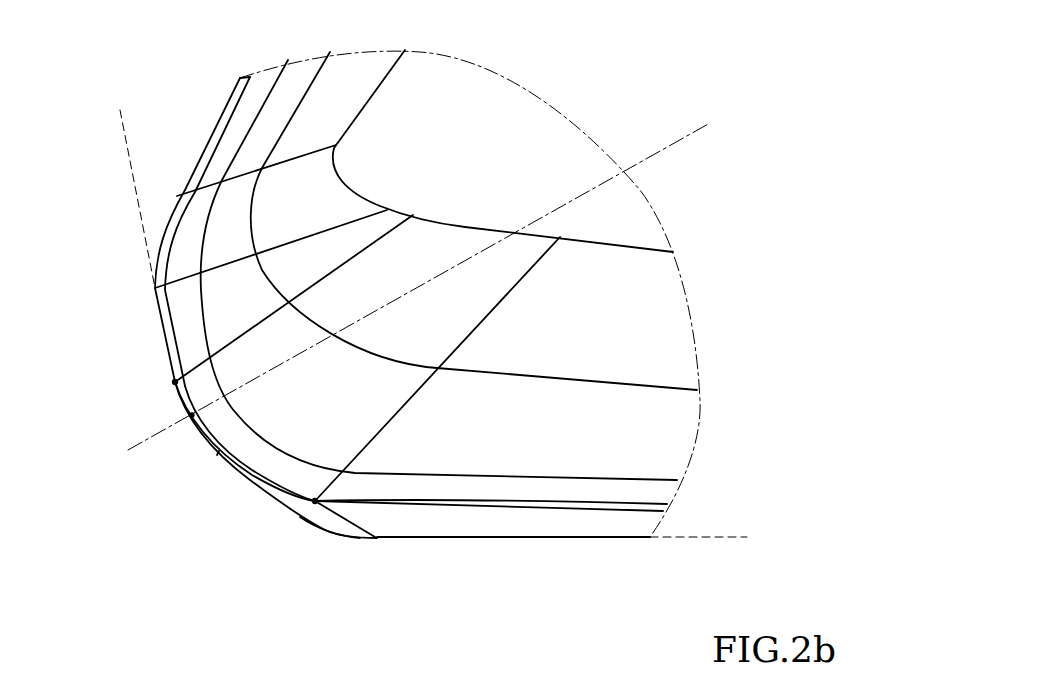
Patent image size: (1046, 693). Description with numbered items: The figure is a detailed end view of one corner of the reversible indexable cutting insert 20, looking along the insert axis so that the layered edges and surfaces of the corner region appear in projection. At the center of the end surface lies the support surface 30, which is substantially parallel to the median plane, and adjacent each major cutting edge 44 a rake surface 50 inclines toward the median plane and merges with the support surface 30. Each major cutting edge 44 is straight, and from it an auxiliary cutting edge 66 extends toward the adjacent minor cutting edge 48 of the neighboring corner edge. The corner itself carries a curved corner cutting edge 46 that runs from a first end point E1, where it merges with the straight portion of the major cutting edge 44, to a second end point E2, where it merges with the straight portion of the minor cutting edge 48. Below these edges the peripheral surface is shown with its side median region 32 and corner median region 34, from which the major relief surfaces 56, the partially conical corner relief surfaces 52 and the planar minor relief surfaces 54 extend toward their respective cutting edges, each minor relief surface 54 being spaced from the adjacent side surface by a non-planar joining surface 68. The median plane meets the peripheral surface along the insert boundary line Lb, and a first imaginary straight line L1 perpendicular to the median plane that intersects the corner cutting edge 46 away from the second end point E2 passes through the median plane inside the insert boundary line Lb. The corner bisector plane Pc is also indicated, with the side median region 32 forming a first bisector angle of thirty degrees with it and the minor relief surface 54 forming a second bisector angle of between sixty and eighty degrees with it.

The reversible indexable cutting insert 20 is at (559, 59).
The support surface 30 is at (438, 90).
The side median region 32 is at (547, 549).
The corner median region 34 is at (322, 545).
The major cutting edge 44 is at (388, 503).
The corner cutting edge 46 is at (270, 492).
The minor cutting edge 48 is at (160, 320).
The rake surface 50 is at (478, 440).
The corner relief surface 52 is at (302, 507).
The minor relief surface 54 is at (162, 338).
The major relief surface 56 is at (483, 520).
The auxiliary cutting edge 66 is at (198, 157).
The non-planar joining surface 68 is at (163, 218).
The first end point E1 is at (307, 487).
The second end point E2 is at (157, 385).
The first imaginary straight line L1 is at (192, 415).
The insert boundary line Lb is at (220, 453).
The corner bisector plane Pc is at (419, 296).